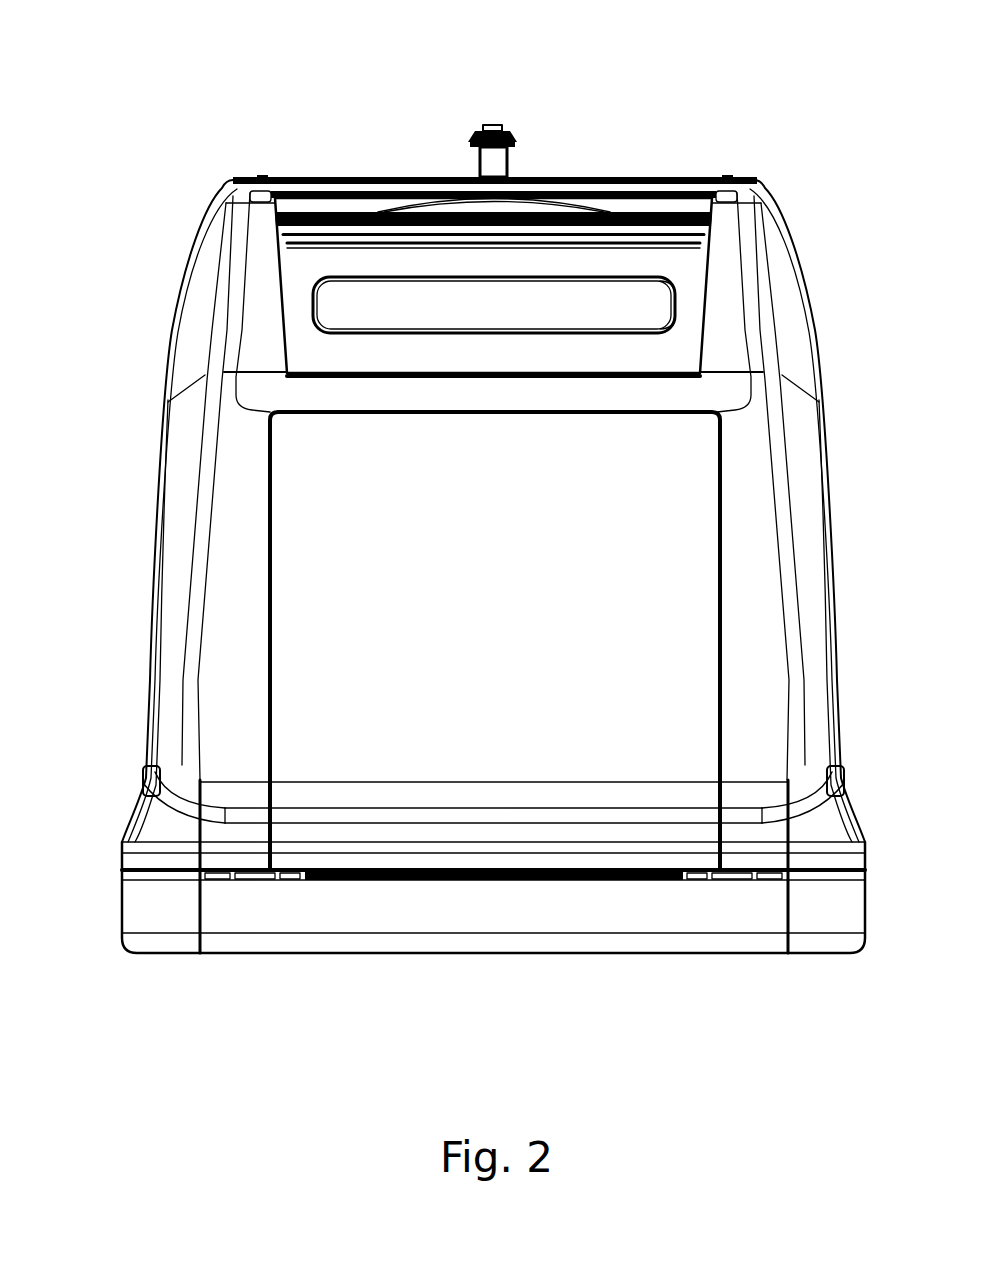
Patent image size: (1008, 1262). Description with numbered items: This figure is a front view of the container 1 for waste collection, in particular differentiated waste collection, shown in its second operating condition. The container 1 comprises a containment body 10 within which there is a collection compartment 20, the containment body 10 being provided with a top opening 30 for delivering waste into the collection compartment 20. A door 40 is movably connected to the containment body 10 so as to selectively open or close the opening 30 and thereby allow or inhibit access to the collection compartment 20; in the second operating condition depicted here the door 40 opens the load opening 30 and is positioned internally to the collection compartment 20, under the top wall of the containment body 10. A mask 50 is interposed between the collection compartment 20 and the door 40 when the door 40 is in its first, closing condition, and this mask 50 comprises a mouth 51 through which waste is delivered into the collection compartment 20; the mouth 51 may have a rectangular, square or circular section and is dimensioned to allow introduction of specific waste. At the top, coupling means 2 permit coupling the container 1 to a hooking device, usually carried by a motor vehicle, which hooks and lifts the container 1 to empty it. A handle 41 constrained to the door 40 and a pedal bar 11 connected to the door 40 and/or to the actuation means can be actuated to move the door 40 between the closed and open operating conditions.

The container 1 is at (160, 93).
The coupling means 2 is at (490, 158).
The containment body 10 is at (162, 477).
The pedal bar 11 is at (311, 817).
The collection compartment 20 is at (585, 295).
The top opening 30 is at (280, 298).
The door 40 is at (327, 210).
The handle 41 is at (394, 210).
The mask 50 is at (695, 282).
The mouth 51 is at (677, 303).